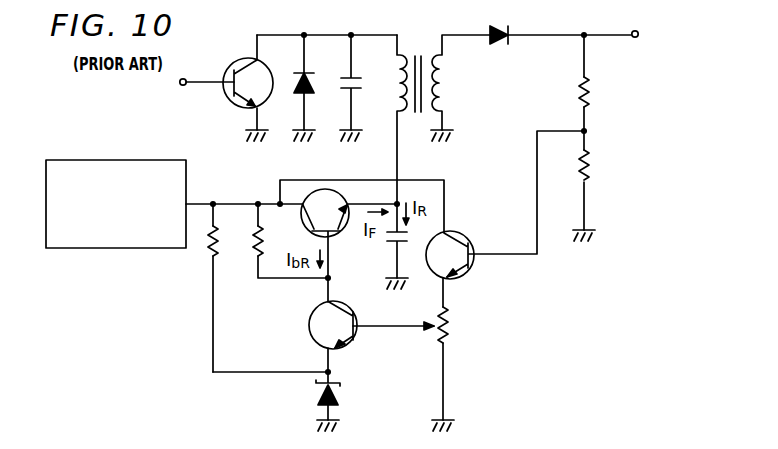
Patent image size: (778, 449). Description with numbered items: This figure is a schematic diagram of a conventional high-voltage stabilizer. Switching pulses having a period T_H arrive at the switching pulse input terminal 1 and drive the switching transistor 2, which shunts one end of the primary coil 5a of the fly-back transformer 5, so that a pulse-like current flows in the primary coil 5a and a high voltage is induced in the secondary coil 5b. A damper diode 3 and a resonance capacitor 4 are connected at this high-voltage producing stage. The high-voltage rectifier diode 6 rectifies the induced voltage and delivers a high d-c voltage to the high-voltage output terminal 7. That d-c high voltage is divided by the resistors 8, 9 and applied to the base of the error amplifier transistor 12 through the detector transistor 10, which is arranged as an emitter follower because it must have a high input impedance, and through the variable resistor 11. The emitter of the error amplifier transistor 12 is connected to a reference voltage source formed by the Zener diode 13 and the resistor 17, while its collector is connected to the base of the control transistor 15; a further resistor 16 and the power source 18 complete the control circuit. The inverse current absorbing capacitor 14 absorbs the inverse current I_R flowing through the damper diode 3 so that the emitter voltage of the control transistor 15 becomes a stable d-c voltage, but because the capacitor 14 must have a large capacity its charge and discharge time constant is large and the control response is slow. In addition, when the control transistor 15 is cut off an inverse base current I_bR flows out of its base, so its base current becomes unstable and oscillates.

The switching pulse input terminal 1 is at (181, 86).
The switching transistor 2 is at (230, 99).
The damper diode 3 is at (299, 83).
The resonance capacitor 4 is at (343, 85).
The fly-back transformer 5 is at (418, 55).
The primary coil 5a is at (398, 85).
The secondary coil 5b is at (446, 78).
The high-voltage rectifier diode 6 is at (492, 28).
The high-voltage output terminal 7 is at (639, 31).
The resistor 8 is at (592, 92).
The resistor 9 is at (592, 157).
The detector transistor 10 is at (462, 238).
The variable resistor 11 is at (452, 322).
The error amplifier transistor 12 is at (309, 325).
The Zener diode 13 is at (317, 397).
The inverse current absorbing capacitor 14 is at (386, 239).
The control transistor 15 is at (339, 237).
The resistor 16 is at (251, 247).
The resistor 17 is at (205, 249).
The power source 18 is at (140, 160).